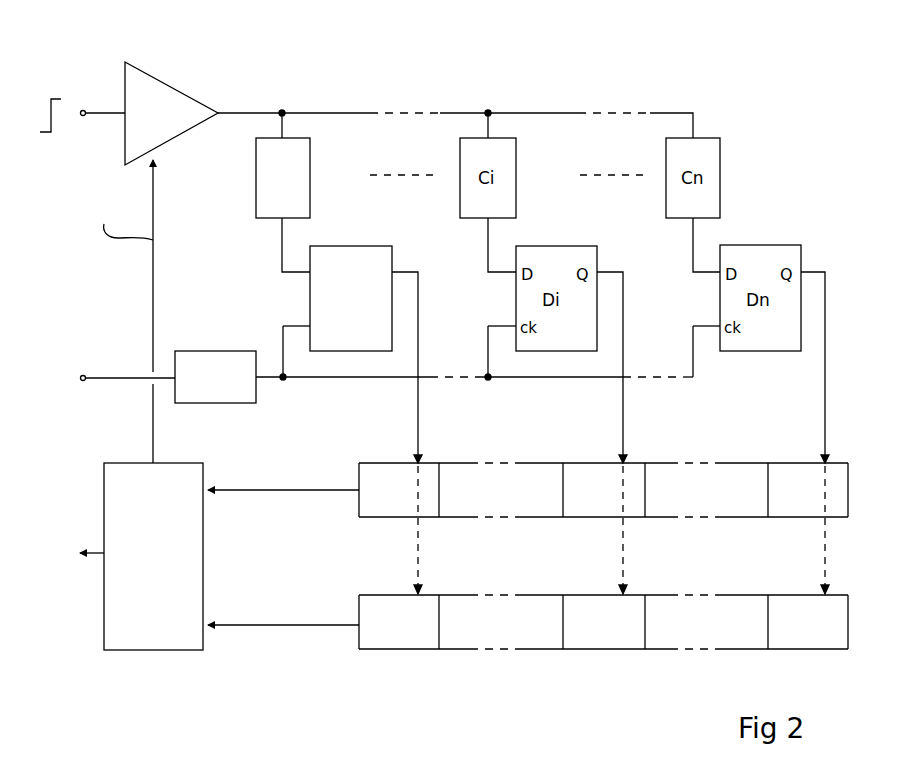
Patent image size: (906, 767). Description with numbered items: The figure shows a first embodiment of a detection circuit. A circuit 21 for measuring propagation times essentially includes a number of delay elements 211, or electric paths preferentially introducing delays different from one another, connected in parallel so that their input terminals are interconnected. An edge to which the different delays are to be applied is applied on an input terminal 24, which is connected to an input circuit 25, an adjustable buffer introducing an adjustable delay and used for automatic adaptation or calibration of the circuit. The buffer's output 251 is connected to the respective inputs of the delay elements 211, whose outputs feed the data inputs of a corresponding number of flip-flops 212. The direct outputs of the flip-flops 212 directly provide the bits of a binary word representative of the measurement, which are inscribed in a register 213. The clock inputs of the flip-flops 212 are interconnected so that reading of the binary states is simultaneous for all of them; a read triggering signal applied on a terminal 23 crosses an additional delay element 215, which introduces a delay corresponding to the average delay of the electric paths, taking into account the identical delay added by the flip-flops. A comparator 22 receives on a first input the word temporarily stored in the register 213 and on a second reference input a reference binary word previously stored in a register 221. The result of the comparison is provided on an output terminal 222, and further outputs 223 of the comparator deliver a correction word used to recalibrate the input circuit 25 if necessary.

The circuit for measuring the propagation times 21 is at (537, 91).
The delay elements 211 is at (310, 158).
The flip-flops 212 is at (392, 262).
The register 213 is at (428, 462).
The additional delay element 215 is at (204, 351).
The comparator 22 is at (150, 651).
The register 221 is at (392, 651).
The output terminal 222 is at (76, 553).
The outputs 223 is at (153, 426).
The terminal 23 is at (83, 381).
The input terminal 24 is at (83, 110).
The input circuit 25 is at (162, 84).
The output 251 is at (254, 112).